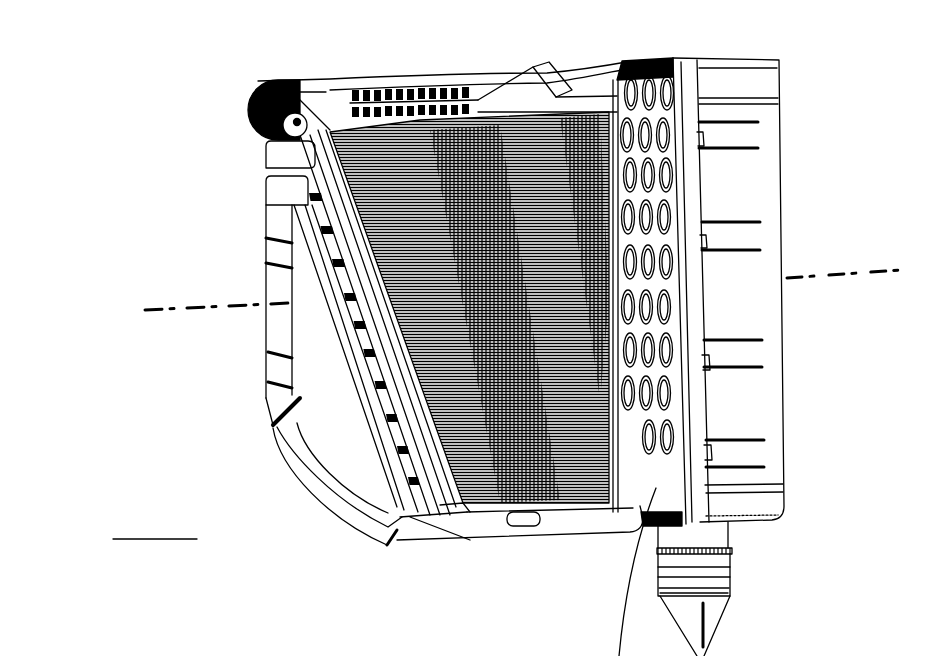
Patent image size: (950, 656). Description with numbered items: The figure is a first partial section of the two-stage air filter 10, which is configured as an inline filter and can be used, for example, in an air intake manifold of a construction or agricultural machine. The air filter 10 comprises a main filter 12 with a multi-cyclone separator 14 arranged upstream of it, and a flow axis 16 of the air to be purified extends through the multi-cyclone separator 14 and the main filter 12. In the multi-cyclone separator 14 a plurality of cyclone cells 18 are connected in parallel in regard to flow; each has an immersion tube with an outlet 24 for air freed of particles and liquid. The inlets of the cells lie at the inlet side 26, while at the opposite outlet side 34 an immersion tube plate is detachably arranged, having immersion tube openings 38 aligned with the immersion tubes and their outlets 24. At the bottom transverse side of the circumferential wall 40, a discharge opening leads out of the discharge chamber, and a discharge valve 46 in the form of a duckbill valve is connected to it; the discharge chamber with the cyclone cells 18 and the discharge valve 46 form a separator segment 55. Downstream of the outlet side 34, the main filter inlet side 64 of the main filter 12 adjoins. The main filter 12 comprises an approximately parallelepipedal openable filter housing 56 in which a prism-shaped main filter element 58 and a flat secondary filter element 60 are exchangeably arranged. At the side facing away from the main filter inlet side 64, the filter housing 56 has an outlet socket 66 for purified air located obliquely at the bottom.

The air filter 10 is at (75, 83).
The main filter 12 is at (457, 68).
The multi-cyclone separator 14 is at (777, 62).
The flow axis 16 is at (167, 306).
The cyclone cells 18 is at (676, 183).
The outlet 24 is at (650, 397).
The inlet side 26 is at (822, 341).
The outlet side 34 is at (613, 542).
The immersion tube openings 38 is at (653, 462).
The circumferential wall 40 is at (718, 78).
The discharge valve 46 is at (712, 577).
The separator segment 55 is at (668, 249).
The filter housing 56 is at (327, 78).
The main filter element 58 is at (415, 135).
The secondary filter element 60 is at (340, 297).
The main filter inlet side 64 is at (610, 106).
The outlet socket 66 is at (287, 444).